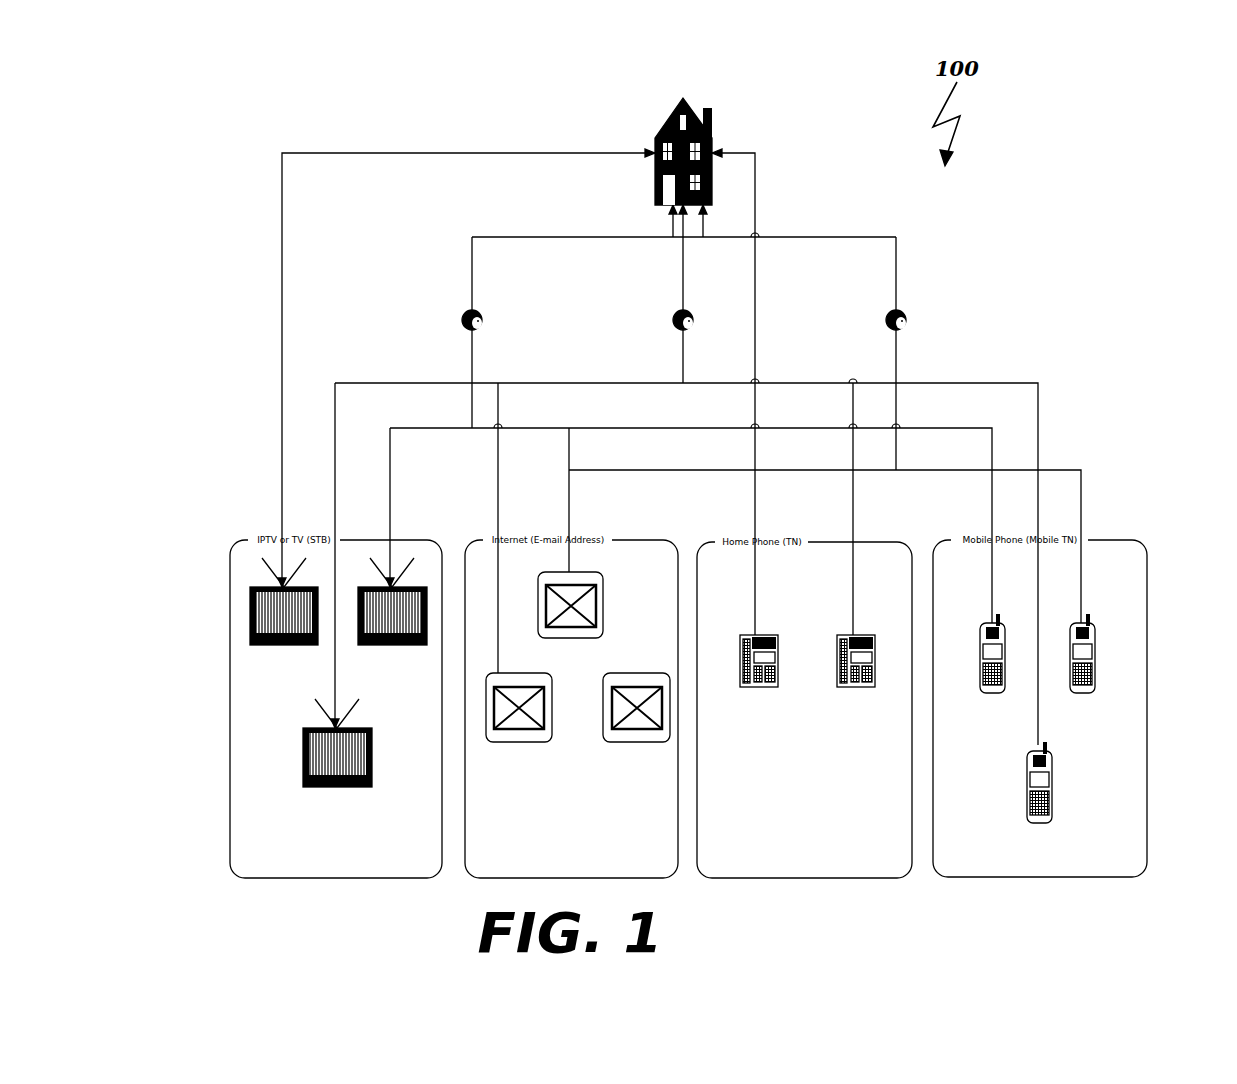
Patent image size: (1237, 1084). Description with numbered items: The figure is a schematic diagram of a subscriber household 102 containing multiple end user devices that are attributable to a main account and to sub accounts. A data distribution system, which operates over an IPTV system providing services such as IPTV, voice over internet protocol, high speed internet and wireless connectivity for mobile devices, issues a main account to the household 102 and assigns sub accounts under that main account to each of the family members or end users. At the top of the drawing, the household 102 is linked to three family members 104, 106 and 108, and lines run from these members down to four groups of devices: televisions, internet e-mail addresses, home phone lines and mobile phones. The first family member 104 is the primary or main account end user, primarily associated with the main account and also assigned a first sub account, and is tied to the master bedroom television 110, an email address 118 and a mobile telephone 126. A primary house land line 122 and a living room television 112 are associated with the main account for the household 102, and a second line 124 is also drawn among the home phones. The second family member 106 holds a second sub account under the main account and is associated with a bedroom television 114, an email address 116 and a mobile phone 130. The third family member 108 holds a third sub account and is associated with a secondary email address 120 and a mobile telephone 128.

The household 102 is at (708, 138).
The first family member 104 is at (487, 313).
The second family member 106 is at (696, 313).
The third family member 108 is at (908, 312).
The master bedroom television 110 is at (425, 583).
The living room television 112 is at (250, 587).
The bedroom television 114 is at (303, 765).
The email address 116 is at (508, 673).
The email address 118 is at (595, 572).
The secondary email address 120 is at (655, 673).
The primary house land line 122 is at (770, 635).
The second line home phone 124 is at (867, 635).
The mobile telephone 126 is at (1000, 622).
The mobile telephone 128 is at (1090, 622).
The mobile phone 130 is at (1055, 797).